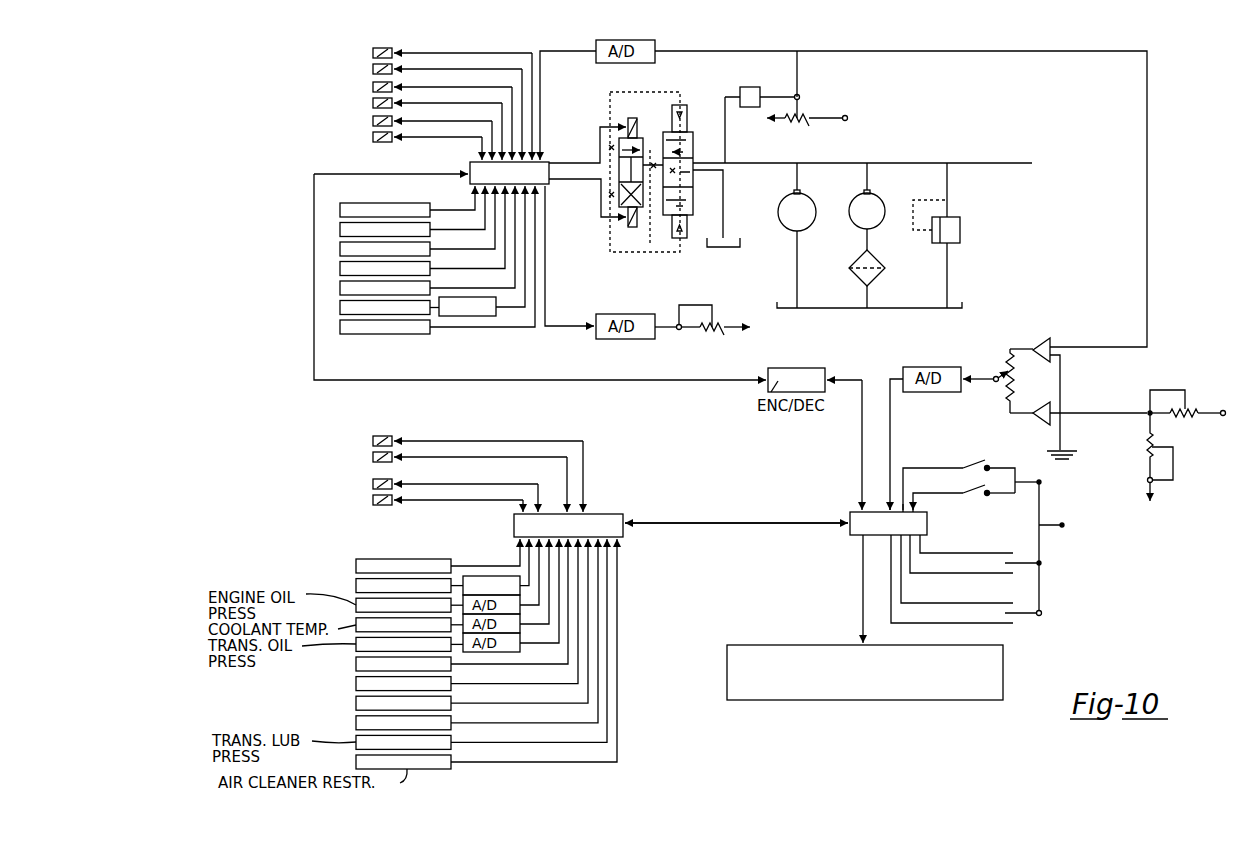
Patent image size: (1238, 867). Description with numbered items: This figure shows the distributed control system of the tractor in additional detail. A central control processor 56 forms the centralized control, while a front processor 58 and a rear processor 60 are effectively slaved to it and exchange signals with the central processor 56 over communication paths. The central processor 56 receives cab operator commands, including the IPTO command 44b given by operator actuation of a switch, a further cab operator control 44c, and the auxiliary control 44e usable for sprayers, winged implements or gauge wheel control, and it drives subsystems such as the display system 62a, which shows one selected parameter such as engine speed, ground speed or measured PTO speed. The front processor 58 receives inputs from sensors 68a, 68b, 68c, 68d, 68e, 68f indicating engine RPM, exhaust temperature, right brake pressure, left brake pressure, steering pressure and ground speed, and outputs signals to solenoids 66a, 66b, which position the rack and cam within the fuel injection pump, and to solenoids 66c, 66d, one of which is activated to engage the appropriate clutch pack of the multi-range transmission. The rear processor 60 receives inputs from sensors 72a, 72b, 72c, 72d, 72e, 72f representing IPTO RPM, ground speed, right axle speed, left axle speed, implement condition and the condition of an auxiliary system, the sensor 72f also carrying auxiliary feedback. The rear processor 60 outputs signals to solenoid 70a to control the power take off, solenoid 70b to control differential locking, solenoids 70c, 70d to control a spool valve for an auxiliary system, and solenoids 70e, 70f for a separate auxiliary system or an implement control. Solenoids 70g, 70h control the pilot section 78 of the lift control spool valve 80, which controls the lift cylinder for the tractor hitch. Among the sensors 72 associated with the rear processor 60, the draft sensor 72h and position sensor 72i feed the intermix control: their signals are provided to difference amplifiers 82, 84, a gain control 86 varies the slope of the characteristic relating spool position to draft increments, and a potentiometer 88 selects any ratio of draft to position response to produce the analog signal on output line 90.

The IPTO command 44b is at (975, 470).
The cab operator control 44c is at (975, 495).
The auxiliary control 44e is at (966, 581).
The central control processor 56 is at (849, 511).
The front processor 58 is at (602, 514).
The rear processor 60 is at (552, 161).
The display system 62a is at (865, 672).
The solenoid 66a is at (371, 442).
The solenoid 66b is at (371, 457).
The solenoid 66c is at (371, 484).
The solenoid 66d is at (371, 500).
The sensor 68a is at (376, 566).
The sensor 68b is at (356, 585).
The sensor 68c is at (356, 665).
The sensor 68d is at (356, 684).
The sensor 68e is at (356, 703).
The sensor 68f is at (356, 723).
The solenoid 70a is at (371, 54).
The solenoid 70b is at (371, 69).
The solenoid 70c is at (371, 87).
The solenoid 70d is at (371, 103).
The solenoid 70e is at (371, 121).
The solenoid 70f is at (371, 137).
The solenoid 70g is at (641, 118).
The solenoid 70h is at (596, 213).
The sensors 72 is at (1142, 455).
The sensor 72a is at (357, 203).
The sensor 72b is at (340, 230).
The sensor 72c is at (340, 249).
The sensor 72d is at (340, 268).
The sensor 72e is at (340, 288).
The sensor 72f is at (340, 308).
The draft sensor 72h is at (723, 321).
The position sensor 72i is at (802, 112).
The pilot section 78 is at (636, 162).
The lift control spool valve 80 is at (683, 134).
The difference amplifier 82 is at (1038, 342).
The difference amplifier 84 is at (1037, 418).
The gain control 86 is at (1190, 410).
The potentiometer 88 is at (998, 383).
The output line 90 is at (892, 432).